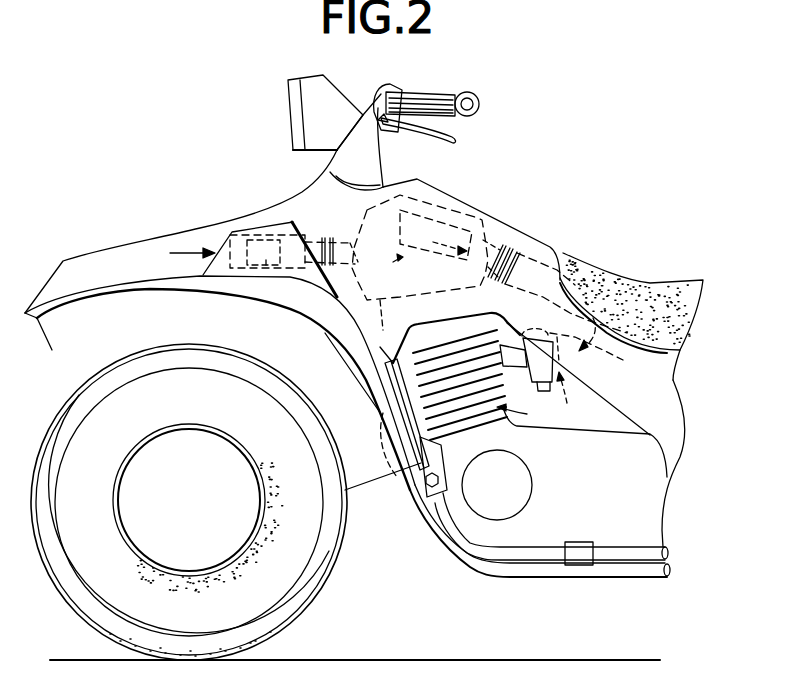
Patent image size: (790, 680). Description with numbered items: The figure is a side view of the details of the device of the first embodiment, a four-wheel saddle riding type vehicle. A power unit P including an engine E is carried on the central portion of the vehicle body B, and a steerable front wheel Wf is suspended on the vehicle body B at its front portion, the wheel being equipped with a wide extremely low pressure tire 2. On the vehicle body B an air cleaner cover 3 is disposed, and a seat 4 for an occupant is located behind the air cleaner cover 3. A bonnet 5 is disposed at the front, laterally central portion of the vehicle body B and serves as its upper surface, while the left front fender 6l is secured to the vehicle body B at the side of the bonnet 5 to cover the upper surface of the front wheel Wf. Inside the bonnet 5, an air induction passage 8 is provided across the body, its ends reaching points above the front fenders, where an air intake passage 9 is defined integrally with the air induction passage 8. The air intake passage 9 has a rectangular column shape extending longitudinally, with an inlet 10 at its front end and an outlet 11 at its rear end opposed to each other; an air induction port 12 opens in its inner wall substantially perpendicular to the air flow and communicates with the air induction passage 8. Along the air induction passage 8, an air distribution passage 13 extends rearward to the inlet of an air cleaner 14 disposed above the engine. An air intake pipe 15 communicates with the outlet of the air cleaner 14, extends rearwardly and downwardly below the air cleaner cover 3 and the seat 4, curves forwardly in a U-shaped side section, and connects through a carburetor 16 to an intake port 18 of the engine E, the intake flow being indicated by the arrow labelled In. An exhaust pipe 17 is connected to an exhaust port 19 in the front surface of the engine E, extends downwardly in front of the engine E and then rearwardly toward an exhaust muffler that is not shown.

The vehicle body B is at (300, 190).
The wide extremely low pressure tire 2 is at (316, 582).
The air cleaner cover 3 is at (507, 232).
The seat 4 is at (626, 284).
The bonnet 5 is at (155, 245).
The left front fender 6l is at (122, 285).
The air induction passage 8 is at (294, 224).
The air intake passage 9 is at (257, 232).
The inlet 10 is at (222, 247).
The outlet 11 is at (308, 242).
The air induction port 12 is at (277, 278).
The air distribution passage 13 is at (340, 282).
The air cleaner 14 is at (386, 388).
The air intake pipe 15 is at (537, 297).
The carburetor 16 is at (545, 372).
The exhaust pipe 17 is at (453, 555).
The intake port 18 is at (497, 341).
The exhaust port 19 is at (430, 390).
The engine E is at (518, 412).
The intake flow In is at (567, 400).
The power unit P is at (602, 421).
The front wheel Wf is at (273, 638).